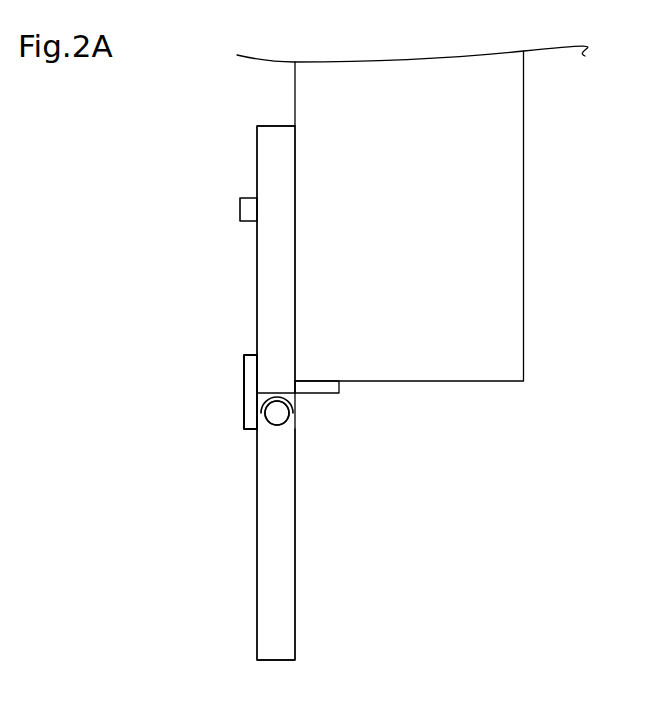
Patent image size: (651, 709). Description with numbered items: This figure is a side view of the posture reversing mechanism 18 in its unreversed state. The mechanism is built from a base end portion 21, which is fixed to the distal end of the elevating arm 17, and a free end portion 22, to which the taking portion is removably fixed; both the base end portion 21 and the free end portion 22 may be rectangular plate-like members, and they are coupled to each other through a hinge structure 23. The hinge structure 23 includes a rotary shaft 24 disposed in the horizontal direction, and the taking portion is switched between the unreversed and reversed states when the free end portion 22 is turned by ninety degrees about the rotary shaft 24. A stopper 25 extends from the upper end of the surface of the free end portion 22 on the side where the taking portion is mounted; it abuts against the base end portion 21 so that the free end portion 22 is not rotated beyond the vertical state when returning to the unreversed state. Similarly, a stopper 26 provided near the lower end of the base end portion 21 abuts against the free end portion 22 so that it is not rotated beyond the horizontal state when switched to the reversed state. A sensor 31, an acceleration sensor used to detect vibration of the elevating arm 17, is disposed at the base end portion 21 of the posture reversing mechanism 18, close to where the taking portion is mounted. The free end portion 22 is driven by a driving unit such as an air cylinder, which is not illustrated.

The elevating arm 17 is at (524, 155).
The posture reversing mechanism 18 is at (257, 268).
The base end portion 21 is at (257, 140).
The free end portion 22 is at (257, 598).
The hinge structure 23 is at (301, 410).
The rotary shaft 24 is at (272, 427).
The stopper 25 is at (244, 383).
The stopper 26 is at (345, 393).
The sensor 31 is at (240, 208).